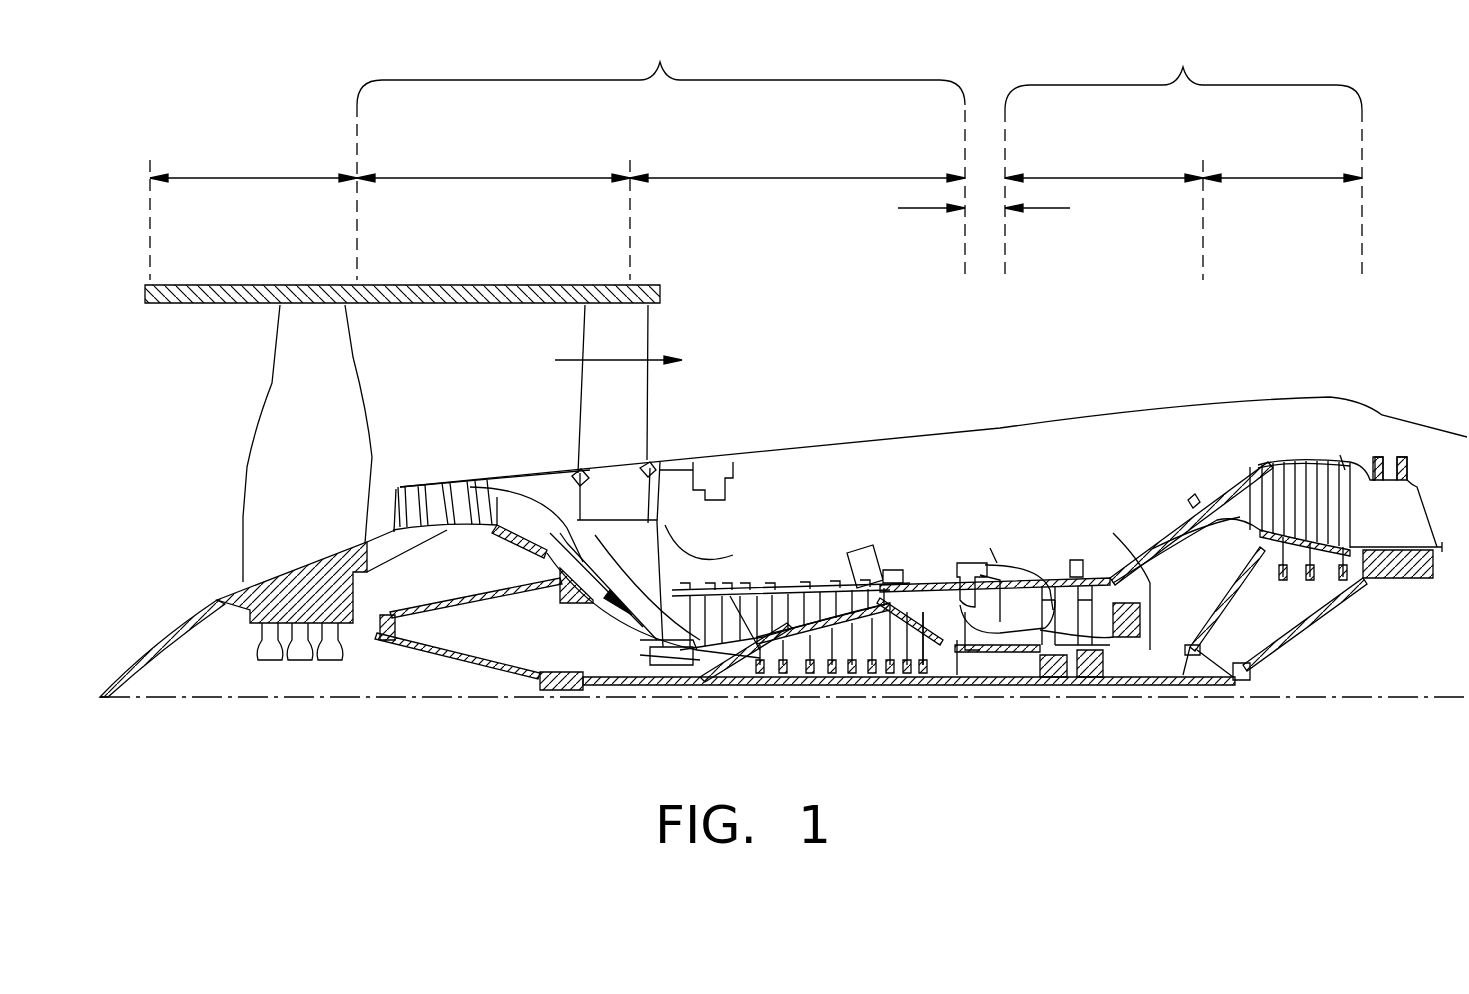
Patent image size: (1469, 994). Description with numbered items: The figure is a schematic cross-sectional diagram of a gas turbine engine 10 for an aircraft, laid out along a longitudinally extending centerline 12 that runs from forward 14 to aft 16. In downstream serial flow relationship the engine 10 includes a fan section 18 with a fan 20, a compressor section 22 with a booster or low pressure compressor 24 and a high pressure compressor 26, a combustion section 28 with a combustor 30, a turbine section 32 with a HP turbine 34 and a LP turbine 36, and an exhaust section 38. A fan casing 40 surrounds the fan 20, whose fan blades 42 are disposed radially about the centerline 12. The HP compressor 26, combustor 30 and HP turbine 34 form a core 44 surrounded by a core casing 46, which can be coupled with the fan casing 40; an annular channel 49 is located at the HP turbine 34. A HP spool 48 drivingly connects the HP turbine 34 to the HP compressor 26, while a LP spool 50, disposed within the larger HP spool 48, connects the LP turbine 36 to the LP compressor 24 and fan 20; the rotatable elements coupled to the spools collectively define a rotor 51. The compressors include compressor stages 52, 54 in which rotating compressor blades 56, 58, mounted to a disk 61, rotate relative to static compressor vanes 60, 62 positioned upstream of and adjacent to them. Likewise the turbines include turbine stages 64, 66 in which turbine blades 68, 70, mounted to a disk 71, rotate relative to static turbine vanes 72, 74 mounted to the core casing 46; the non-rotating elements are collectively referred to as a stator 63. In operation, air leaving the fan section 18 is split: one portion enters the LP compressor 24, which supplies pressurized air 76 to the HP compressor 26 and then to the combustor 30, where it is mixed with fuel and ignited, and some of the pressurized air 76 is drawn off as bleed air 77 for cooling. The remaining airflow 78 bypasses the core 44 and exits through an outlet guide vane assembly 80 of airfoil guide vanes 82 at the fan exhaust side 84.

The gas turbine engine 10 is at (1380, 207).
The centerline 12 is at (233, 700).
The forward 14 is at (185, 425).
The aft 16 is at (1465, 520).
The fan section 18 is at (255, 178).
The fan 20 is at (218, 543).
The compressor section 22 is at (660, 62).
The low pressure compressor 24 is at (502, 178).
The high pressure compressor 26 is at (805, 178).
The combustion section 28 is at (912, 208).
The combustor 30 is at (993, 575).
The turbine section 32 is at (1183, 67).
The HP turbine 34 is at (1107, 178).
The LP turbine 36 is at (1295, 178).
The exhaust section 38 is at (1452, 458).
The fan casing 40 is at (395, 285).
The fan blades 42 is at (332, 360).
The core 44 is at (930, 465).
The core casing 46 is at (1188, 508).
The HP spool 48 is at (967, 652).
The annular channel 49 is at (1212, 518).
The LP spool 50 is at (560, 684).
The rotor 51 is at (1150, 640).
The compressor stages 52 is at (477, 433).
The compressor stages 54 is at (800, 560).
The compressor blades 56 is at (437, 490).
The compressor blades 58 is at (730, 585).
The static compressor vanes 60 is at (410, 488).
The disk 61 is at (455, 535).
The static compressor vanes 62 is at (720, 575).
The stator 63 is at (694, 650).
The turbine stages 64 is at (1060, 576).
The turbine stages 66 is at (1296, 388).
The turbine blades 68 is at (1065, 575).
The turbine blades 70 is at (1347, 463).
The disk 71 is at (1080, 635).
The static turbine vanes 72 is at (1040, 575).
The static turbine vanes 74 is at (1333, 462).
The pressurized air 76 is at (597, 605).
The bleed air 77 is at (830, 565).
The airflow 78 is at (575, 362).
The outlet guide vane assembly 80 is at (680, 420).
The airfoil guide vanes 82 is at (592, 398).
The fan exhaust side 84 is at (680, 330).